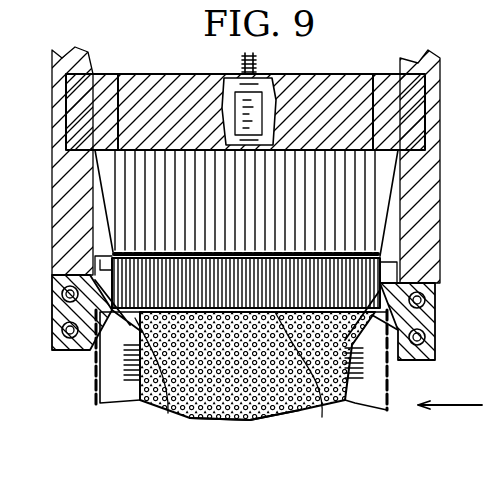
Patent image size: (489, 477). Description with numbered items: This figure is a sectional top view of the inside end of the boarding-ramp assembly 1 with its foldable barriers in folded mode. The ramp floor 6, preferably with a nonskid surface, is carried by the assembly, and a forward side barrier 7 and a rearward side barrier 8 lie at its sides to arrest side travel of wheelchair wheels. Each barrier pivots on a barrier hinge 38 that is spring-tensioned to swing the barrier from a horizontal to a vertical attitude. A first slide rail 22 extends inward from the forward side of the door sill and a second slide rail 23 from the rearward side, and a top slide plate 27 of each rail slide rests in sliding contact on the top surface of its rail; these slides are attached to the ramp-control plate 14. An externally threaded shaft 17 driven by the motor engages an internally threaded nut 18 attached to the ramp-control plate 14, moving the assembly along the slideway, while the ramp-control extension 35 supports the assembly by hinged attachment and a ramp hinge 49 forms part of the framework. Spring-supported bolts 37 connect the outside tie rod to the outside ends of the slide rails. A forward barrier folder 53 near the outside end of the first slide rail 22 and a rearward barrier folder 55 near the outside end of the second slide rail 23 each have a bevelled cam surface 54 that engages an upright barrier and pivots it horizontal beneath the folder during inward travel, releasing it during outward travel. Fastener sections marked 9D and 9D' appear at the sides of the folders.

The boarding-ramp assembly 1 is at (486, 331).
The ramp floor 6 is at (204, 412).
The forward side barrier 7 is at (370, 395).
The rearward side barrier 8 is at (115, 385).
The fastener 9D is at (44, 311).
The fastener 9D' is at (444, 318).
The ramp-control plate 14 is at (178, 95).
The externally threaded shaft 17 is at (245, 60).
The internally threaded nut 18 is at (262, 108).
The first slide rail 22 is at (424, 65).
The second slide rail 23 is at (72, 58).
The top slide plate 27 is at (96, 100).
The ramp-control extension 35 is at (295, 192).
The spring-supported bolts 37 is at (70, 352).
The barrier hinge 38 is at (96, 390).
The ramp hinge 49 is at (245, 412).
The forward barrier folder 53 is at (397, 280).
The cam surface 54 is at (486, 214).
The rearward barrier folder 55 is at (486, 171).